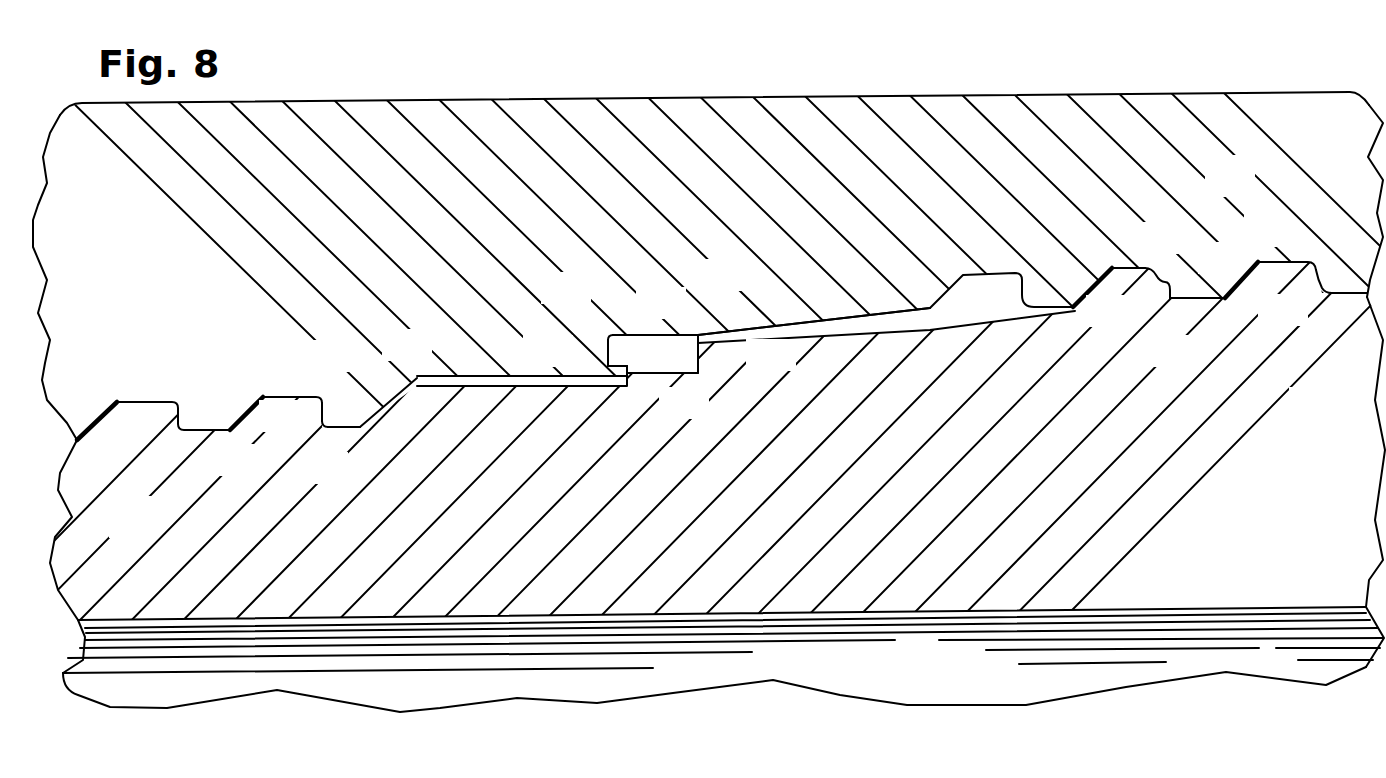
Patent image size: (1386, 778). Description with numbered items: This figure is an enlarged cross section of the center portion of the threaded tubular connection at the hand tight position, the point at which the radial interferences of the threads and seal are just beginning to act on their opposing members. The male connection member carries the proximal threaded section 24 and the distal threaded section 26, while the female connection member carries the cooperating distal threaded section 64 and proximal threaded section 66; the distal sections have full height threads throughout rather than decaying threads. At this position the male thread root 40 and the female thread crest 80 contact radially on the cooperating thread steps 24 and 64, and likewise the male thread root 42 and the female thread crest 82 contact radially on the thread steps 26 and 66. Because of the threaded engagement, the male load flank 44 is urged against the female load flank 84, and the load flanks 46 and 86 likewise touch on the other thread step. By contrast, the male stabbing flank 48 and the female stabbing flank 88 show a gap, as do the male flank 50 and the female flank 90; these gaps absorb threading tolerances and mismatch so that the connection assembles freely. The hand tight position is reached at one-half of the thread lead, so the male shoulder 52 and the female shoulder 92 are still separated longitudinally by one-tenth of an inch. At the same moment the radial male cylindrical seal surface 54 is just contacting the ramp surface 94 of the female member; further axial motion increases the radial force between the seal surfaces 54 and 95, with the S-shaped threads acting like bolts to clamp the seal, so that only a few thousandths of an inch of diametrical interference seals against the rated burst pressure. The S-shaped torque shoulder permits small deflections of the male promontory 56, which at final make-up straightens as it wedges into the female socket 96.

The proximal threaded section 24 is at (1335, 425).
The distal threaded section 26 is at (155, 533).
The male connection member thread root 40 is at (1200, 300).
The male connection member thread root 42 is at (345, 428).
The male connection member thread load flank 44 is at (1150, 285).
The load flank 46 is at (322, 413).
The male connection member stabbing flank 48 is at (1242, 278).
The male connection member flank 50 is at (245, 432).
The male connection member shoulder 52 is at (705, 375).
The male connection member cylindrical seal surface 54 is at (722, 340).
The male connection member promontory 56 is at (695, 360).
The distal threaded section 64 is at (1250, 193).
The proximal threaded section 66 is at (122, 350).
The female connection member thread crest 80 is at (1205, 298).
The female connection member thread crest 82 is at (447, 365).
The female connection member load flank 84 is at (1175, 297).
The load flank 86 is at (340, 425).
The female connection member stabbing flank 88 is at (1292, 235).
The female connection member flank 90 is at (250, 400).
The female connection member shoulder 92 is at (607, 368).
The ramp female connection member surface 94 is at (753, 322).
The cylindrical seal surface 95 is at (684, 302).
The female connection member socket 96 is at (612, 367).